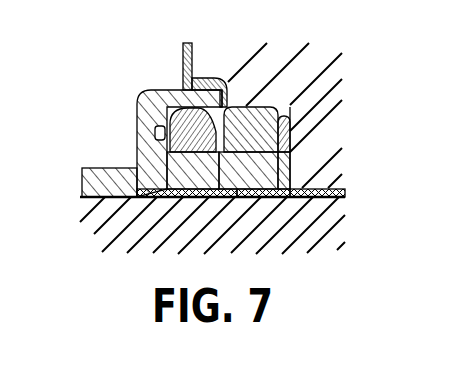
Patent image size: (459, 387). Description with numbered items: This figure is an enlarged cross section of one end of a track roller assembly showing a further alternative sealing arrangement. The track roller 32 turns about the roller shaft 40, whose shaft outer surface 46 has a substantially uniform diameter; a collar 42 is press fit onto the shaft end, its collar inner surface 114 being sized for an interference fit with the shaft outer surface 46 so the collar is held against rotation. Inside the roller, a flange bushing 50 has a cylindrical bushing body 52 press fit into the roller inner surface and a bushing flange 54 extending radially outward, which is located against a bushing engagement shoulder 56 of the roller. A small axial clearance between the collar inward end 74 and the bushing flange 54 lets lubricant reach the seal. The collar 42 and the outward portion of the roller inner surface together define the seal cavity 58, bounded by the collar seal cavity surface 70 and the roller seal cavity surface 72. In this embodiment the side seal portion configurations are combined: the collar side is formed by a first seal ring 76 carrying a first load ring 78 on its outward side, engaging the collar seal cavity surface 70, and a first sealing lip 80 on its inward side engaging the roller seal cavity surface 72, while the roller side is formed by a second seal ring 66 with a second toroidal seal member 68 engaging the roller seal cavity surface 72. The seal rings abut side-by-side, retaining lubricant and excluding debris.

The track roller 32 is at (272, 66).
The roller shaft 40 is at (110, 237).
The collar 42 is at (82, 170).
The shaft outer surface 46 is at (137, 160).
The flange bushing 50 is at (312, 188).
The bushing body 52 is at (333, 202).
The bushing flange 54 is at (287, 173).
The bushing engagement shoulder 56 is at (290, 144).
The seal cavity 58 is at (207, 100).
The second seal ring 66 is at (266, 180).
The second toroidal seal member 68 is at (248, 103).
The collar seal cavity surface 70 is at (140, 105).
The roller seal cavity surface 72 is at (287, 112).
The collar inward end 74 is at (292, 180).
The first seal ring 76 is at (190, 150).
The first load ring 78 is at (180, 102).
The first sealing lip 80 is at (217, 180).
The collar inner surface 114 is at (83, 197).